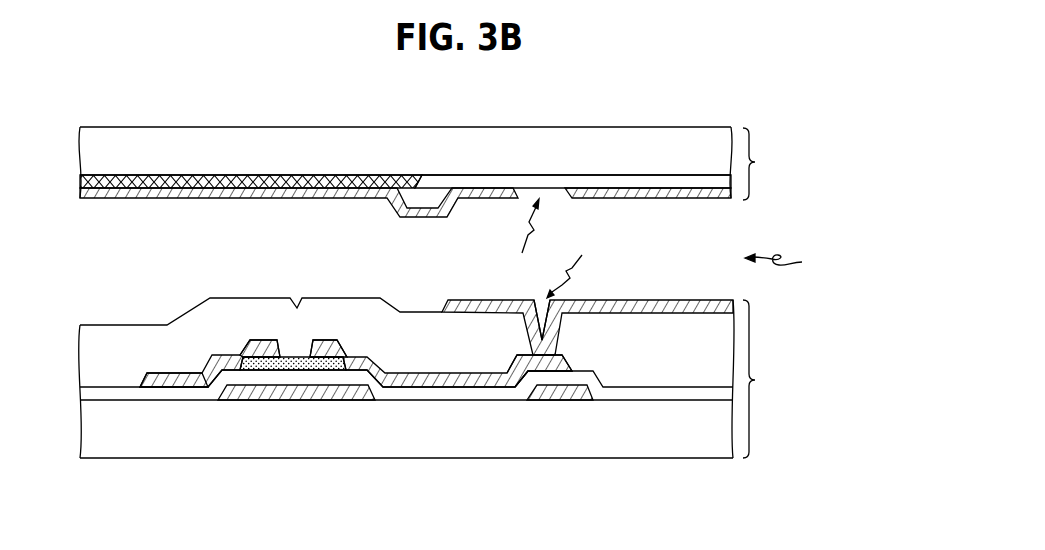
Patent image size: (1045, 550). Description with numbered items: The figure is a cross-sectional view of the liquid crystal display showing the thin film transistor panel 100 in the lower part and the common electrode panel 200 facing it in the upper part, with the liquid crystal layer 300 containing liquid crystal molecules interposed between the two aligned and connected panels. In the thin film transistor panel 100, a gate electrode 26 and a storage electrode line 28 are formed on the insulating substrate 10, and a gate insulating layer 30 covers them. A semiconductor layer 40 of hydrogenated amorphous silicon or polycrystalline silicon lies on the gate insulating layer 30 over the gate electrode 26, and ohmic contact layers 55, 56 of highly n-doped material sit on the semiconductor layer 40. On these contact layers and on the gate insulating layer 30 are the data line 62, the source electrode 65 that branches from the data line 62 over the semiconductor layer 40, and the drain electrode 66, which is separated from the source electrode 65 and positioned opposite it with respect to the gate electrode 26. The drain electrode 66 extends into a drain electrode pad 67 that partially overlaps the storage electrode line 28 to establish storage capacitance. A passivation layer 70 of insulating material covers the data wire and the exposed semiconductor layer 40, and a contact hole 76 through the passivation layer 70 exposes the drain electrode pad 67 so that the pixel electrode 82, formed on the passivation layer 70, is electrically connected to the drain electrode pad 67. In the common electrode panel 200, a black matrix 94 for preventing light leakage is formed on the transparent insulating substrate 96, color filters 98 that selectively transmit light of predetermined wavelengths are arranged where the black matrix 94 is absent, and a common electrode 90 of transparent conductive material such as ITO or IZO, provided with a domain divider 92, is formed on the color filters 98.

The insulating substrate 10 is at (447, 447).
The gate electrode 26 is at (298, 392).
The storage electrode line 28 is at (562, 395).
The gate insulating layer 30 is at (680, 398).
The semiconductor layer 40 is at (287, 357).
The ohmic contact layer 55 is at (265, 335).
The ohmic contact layer 56 is at (322, 337).
The data line 62 is at (157, 380).
The source electrode 65 is at (233, 372).
The drain electrode 66 is at (366, 380).
The drain electrode pad 67 is at (545, 362).
The passivation layer 70 is at (103, 363).
The contact hole 76 is at (566, 287).
The pixel electrode 82 is at (473, 300).
The common electrode 90 is at (650, 198).
The domain divider 92 is at (524, 239).
The black matrix 94 is at (323, 178).
The insulating substrate 96 is at (250, 140).
The color filters 98 is at (577, 182).
The thin film transistor panel 100 is at (770, 379).
The common electrode panel 200 is at (768, 164).
The liquid crystal layer 300 is at (793, 259).